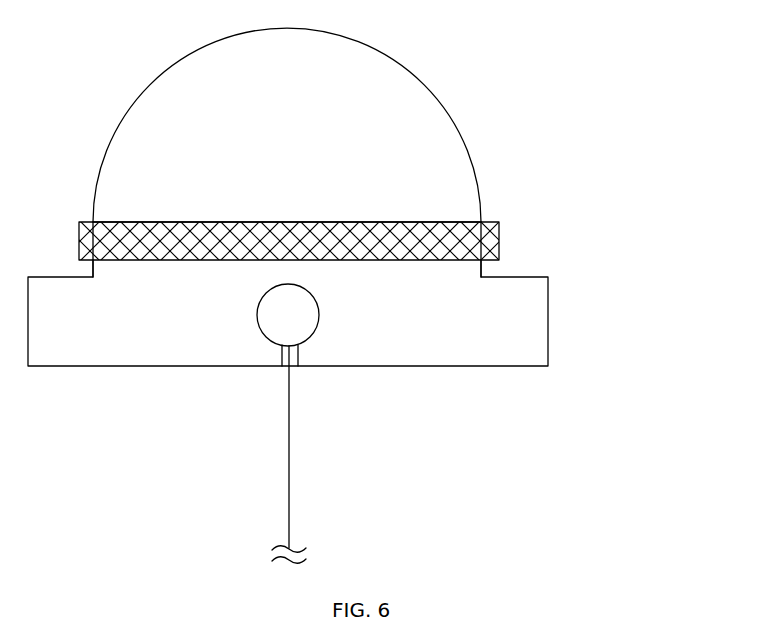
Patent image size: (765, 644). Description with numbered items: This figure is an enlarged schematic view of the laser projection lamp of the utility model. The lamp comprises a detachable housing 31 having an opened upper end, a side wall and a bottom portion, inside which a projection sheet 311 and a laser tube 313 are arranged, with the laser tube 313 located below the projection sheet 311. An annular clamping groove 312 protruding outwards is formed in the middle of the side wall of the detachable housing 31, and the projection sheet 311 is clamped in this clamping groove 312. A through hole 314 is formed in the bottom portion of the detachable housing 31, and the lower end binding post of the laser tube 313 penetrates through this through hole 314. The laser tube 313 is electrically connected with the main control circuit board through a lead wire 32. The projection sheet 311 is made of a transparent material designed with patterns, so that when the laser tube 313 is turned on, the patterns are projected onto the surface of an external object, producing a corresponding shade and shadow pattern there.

The detachable housing 31 is at (430, 85).
The projection sheet 311 is at (440, 222).
The clamping groove 312 is at (499, 250).
The laser tube 313 is at (308, 336).
The through hole 314 is at (296, 355).
The lead wire 32 is at (289, 522).